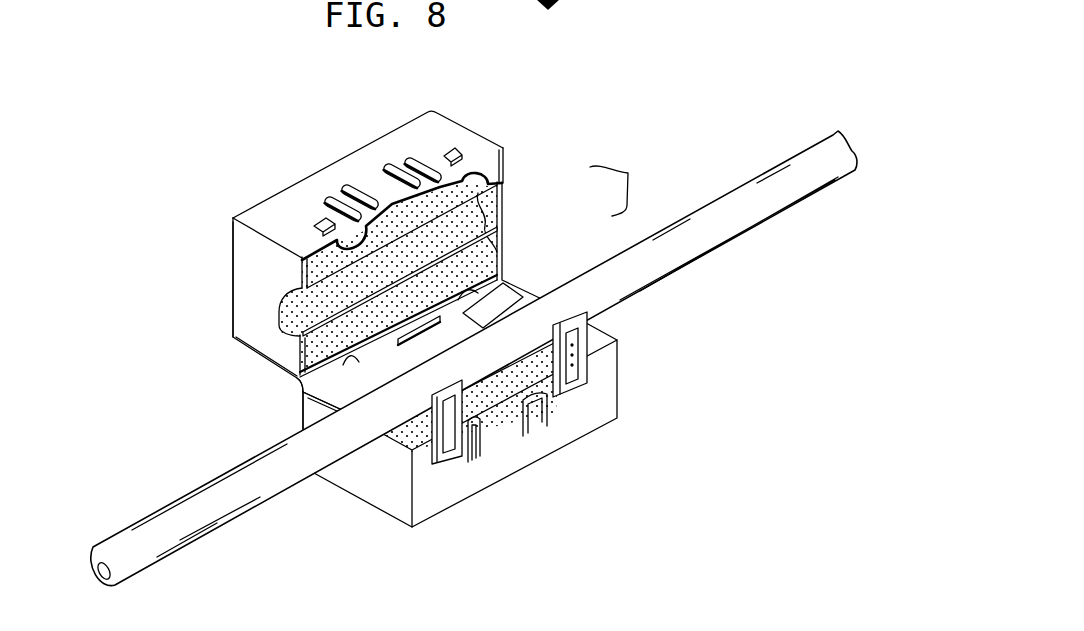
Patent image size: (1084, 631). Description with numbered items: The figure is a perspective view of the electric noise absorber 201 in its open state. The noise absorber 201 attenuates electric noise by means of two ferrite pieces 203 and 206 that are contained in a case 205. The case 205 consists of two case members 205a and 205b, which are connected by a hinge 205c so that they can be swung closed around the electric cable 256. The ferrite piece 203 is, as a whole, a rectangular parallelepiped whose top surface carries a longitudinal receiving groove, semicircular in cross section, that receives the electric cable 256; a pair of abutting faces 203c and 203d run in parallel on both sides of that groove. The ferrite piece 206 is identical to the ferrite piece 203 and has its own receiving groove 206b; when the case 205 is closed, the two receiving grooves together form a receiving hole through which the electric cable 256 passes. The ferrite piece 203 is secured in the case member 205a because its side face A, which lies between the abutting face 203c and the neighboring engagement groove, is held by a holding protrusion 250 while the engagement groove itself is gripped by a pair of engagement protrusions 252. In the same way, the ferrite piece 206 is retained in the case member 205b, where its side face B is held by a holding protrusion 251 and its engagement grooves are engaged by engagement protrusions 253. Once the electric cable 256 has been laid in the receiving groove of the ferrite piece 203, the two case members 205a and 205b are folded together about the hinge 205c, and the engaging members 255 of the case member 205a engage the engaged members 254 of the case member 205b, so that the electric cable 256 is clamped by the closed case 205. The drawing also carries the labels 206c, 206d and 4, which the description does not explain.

The noise absorber 201 is at (634, 180).
The ferrite piece 203 is at (463, 287).
The abutting face 203c is at (247, 419).
The abutting face 203d is at (546, 409).
The case 205 is at (220, 324).
The case member 205a is at (476, 414).
The case member 205b is at (219, 299).
The hinge 205c is at (250, 394).
The ferrite piece 206 is at (444, 273).
The receiving groove 206b is at (554, 200).
The elastic member curved surface 206c is at (557, 190).
The elastic member rim 206d is at (521, 128).
The holding protrusion 250 is at (520, 472).
The holding protrusion 251 is at (366, 196).
The engagement protrusions 252 is at (547, 480).
The engagement protrusions 253 is at (313, 135).
The engaged members 254 is at (313, 147).
The engaging members 255 is at (507, 432).
The electric cable 256 is at (474, 358).
The cable passage 4 is at (510, 275).
The side face A is at (522, 27).
The side face B is at (390, 144).